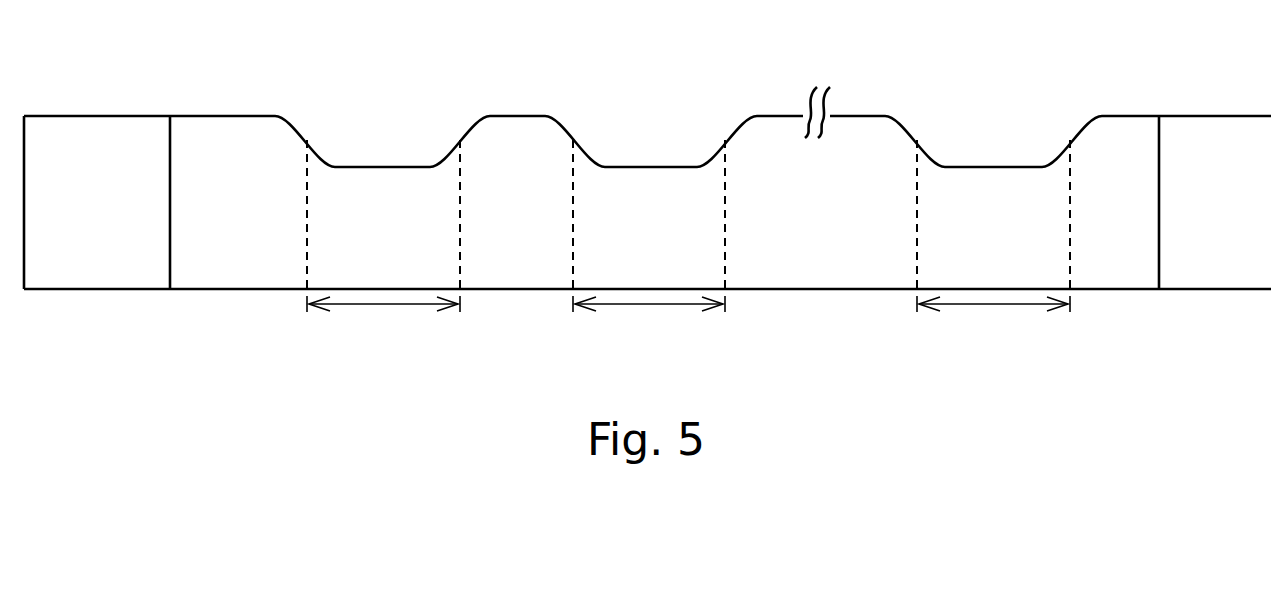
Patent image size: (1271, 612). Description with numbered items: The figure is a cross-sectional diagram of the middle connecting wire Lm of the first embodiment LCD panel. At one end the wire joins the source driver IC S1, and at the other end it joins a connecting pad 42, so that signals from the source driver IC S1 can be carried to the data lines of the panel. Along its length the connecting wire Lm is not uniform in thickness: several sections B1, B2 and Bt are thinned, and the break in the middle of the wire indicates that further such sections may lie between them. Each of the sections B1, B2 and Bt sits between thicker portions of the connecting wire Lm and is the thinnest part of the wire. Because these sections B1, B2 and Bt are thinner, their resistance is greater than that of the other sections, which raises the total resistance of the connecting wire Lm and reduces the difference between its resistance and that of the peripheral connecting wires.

The connecting pad 42 is at (1218, 218).
The source driver IC S1 is at (95, 202).
The connecting wire Lm is at (823, 201).
The thinned section B1 is at (383, 320).
The thinned section B2 is at (649, 320).
The thinned section Bt is at (993, 320).